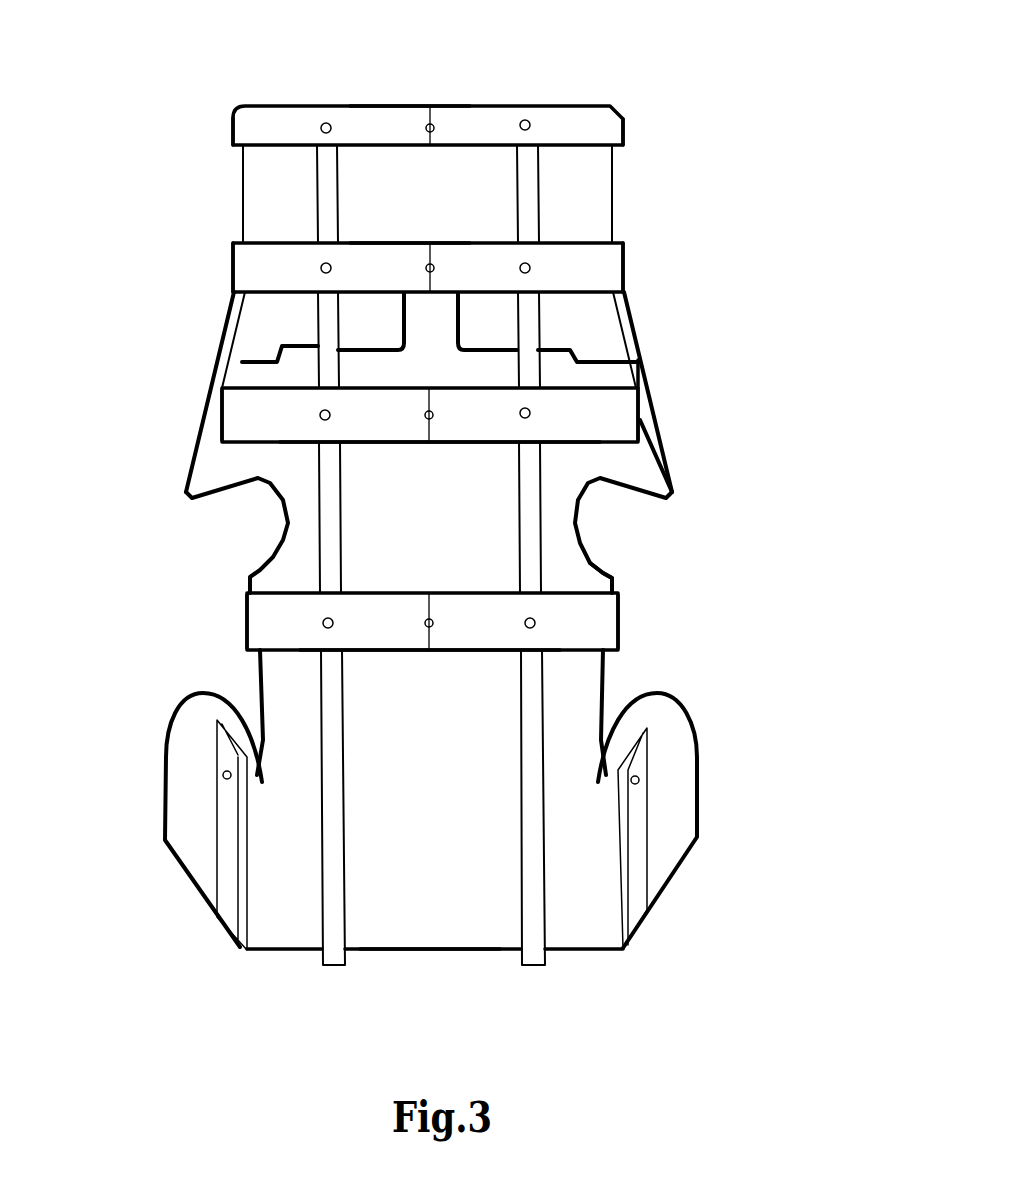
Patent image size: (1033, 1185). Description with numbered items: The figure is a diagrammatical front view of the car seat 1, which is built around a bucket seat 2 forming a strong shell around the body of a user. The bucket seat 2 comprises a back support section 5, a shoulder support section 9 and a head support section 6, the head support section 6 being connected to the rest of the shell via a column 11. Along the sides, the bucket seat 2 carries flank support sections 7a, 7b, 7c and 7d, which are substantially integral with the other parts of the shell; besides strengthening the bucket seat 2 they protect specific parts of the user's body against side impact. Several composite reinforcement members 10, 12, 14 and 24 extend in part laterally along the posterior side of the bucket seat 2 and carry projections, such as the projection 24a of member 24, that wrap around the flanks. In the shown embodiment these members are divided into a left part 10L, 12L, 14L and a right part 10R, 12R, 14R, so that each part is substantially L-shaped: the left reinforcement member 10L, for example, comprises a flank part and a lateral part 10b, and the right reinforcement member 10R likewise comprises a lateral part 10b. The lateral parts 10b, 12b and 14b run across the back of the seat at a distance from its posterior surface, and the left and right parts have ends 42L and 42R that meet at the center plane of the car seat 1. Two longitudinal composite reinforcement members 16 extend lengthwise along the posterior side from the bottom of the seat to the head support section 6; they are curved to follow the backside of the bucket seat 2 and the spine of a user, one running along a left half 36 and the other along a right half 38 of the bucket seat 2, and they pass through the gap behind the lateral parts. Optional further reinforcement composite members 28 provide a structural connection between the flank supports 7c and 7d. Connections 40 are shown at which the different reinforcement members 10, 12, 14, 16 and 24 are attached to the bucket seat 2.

The car seat 1 is at (683, 78).
The bucket seat 2 is at (258, 663).
The back support section 5 is at (433, 790).
The head support section 6 is at (427, 194).
The flank support section 7a is at (672, 730).
The flank support section 7b is at (583, 585).
The flank support section 7c is at (648, 462).
The flank support section 7d is at (240, 187).
The shoulder support section 9 is at (401, 390).
The composite reinforcement member 10 is at (322, 125).
The left reinforcement member 10L is at (252, 127).
The right reinforcement member 10R is at (573, 132).
The lateral part 10b is at (372, 266).
The column 11 is at (440, 343).
The composite reinforcement member 12 is at (237, 403).
The left part 12L is at (263, 406).
The right part 12R is at (557, 422).
The lateral part 12b is at (297, 427).
The composite reinforcement member 14 is at (265, 622).
The left part 14L is at (268, 642).
The right part 14R is at (597, 612).
The lateral part 14b is at (398, 638).
The longitudinal composite reinforcement member 16 is at (330, 902).
The composite reinforcement member 24 is at (233, 866).
The projection 24a is at (230, 812).
The further reinforcement composite member 28 is at (228, 323).
The left half 36 is at (220, 536).
The right half 38 is at (720, 553).
The connections 40 is at (280, 122).
The end 42L is at (407, 703).
The end 42R is at (455, 703).